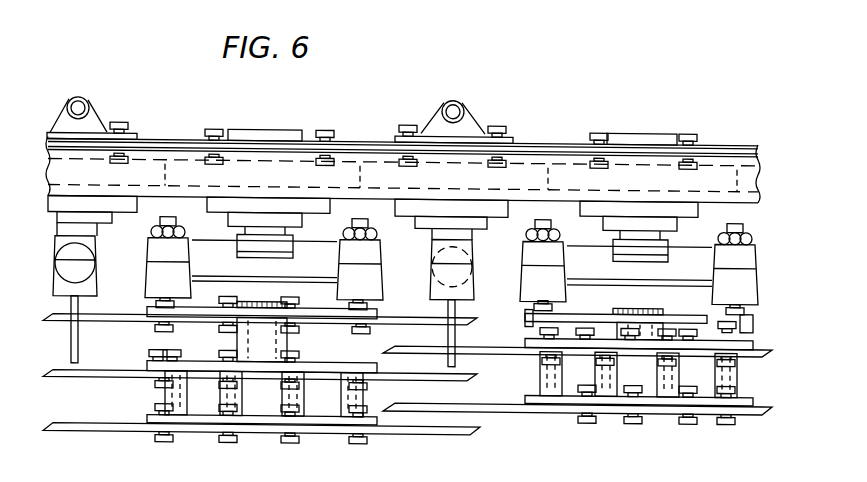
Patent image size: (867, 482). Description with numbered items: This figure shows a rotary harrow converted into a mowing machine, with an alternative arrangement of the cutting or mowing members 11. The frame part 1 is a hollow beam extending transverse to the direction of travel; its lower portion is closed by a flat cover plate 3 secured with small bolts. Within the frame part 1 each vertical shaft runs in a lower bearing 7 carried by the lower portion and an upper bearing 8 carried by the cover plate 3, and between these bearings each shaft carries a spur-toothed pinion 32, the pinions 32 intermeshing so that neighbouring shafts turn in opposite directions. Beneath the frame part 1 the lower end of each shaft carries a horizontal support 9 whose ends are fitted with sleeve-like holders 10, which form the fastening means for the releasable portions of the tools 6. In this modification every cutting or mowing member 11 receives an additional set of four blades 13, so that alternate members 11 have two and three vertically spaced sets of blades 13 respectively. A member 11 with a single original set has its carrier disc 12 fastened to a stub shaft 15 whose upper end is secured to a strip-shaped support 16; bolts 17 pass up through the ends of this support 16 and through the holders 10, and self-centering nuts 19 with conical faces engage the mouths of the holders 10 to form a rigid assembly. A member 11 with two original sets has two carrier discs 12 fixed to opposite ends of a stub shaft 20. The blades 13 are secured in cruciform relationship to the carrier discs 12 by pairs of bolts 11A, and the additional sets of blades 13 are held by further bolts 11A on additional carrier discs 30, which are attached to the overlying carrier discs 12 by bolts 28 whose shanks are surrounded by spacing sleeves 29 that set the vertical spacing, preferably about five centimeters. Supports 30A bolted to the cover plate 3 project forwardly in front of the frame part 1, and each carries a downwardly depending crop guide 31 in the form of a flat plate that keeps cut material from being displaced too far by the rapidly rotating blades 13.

The frame part 1 is at (554, 134).
The cover plate 3 is at (343, 138).
The tool 6 is at (210, 239).
The lower bearing 7 is at (398, 199).
The upper bearing 8 is at (257, 127).
The support 9 is at (312, 249).
The holder 10 is at (150, 268).
The cutting or mowing member 11 is at (124, 439).
The bolt 11A is at (160, 436).
The carrier disc 12 is at (708, 315).
The blade 13 is at (420, 301).
The stub shaft 15 is at (622, 302).
The strip-shaped support 16 is at (527, 310).
The bolt 17 is at (168, 220).
The nut 19 is at (155, 229).
The stub shaft 20 is at (247, 336).
The bolt 28 is at (608, 404).
The spacing sleeve 29 is at (165, 392).
The carrier disc 30 is at (322, 429).
The support 30A is at (82, 103).
The crop guide 31 is at (72, 334).
The pinion 32 is at (710, 153).